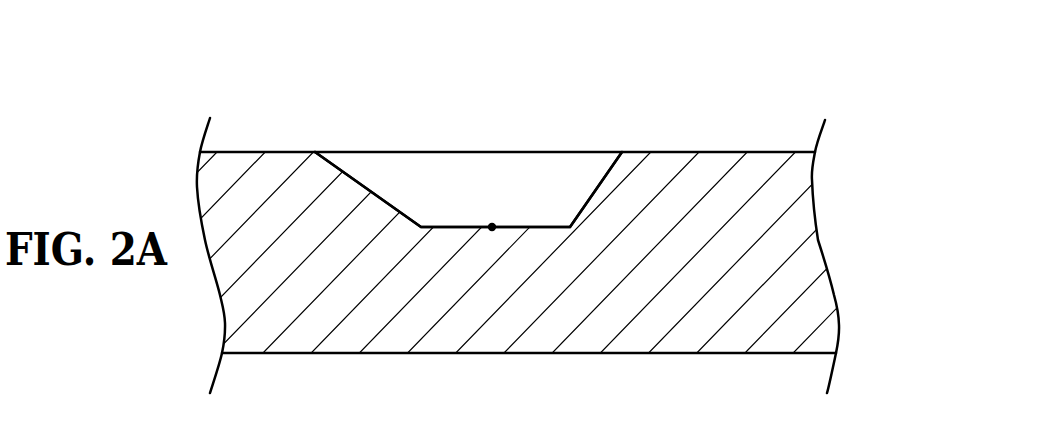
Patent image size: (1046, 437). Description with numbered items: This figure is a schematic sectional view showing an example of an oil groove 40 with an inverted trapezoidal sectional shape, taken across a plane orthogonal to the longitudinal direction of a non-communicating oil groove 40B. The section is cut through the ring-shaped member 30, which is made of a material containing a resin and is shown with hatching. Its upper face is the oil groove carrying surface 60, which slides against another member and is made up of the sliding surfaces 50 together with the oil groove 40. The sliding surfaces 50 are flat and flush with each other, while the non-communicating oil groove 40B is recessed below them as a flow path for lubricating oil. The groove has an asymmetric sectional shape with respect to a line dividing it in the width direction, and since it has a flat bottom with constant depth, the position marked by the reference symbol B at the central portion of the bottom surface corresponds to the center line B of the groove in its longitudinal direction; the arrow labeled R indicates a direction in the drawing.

The ring-shaped member 30 is at (797, 265).
The oil groove carrying surface 60 is at (565, 115).
The non-communicating oil groove 40B is at (483, 167).
The oil groove 40 is at (468, 189).
The sliding surface 50 is at (487, 55).
The center line B is at (492, 231).
The direction R is at (810, 85).